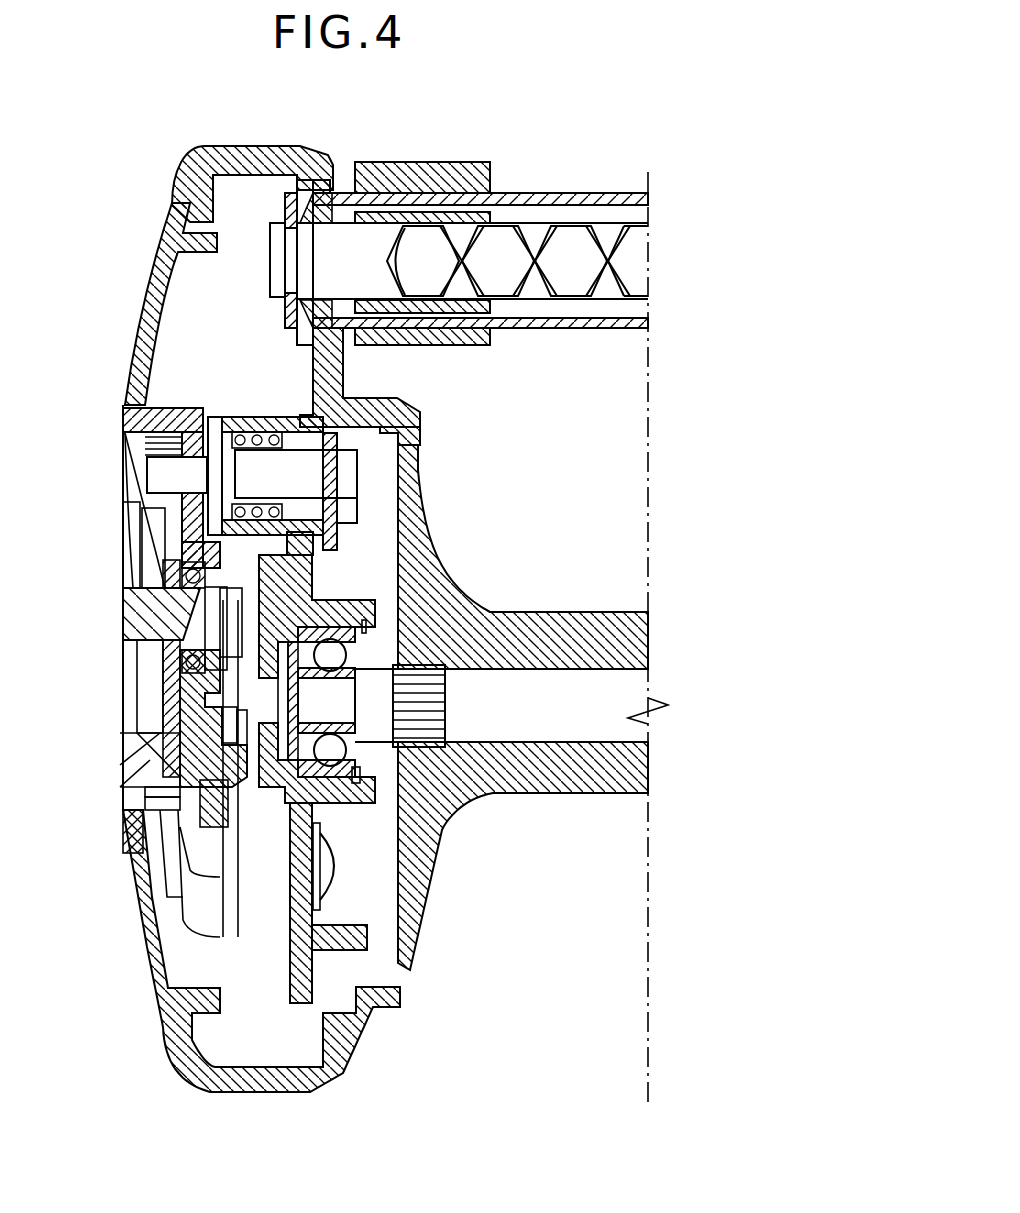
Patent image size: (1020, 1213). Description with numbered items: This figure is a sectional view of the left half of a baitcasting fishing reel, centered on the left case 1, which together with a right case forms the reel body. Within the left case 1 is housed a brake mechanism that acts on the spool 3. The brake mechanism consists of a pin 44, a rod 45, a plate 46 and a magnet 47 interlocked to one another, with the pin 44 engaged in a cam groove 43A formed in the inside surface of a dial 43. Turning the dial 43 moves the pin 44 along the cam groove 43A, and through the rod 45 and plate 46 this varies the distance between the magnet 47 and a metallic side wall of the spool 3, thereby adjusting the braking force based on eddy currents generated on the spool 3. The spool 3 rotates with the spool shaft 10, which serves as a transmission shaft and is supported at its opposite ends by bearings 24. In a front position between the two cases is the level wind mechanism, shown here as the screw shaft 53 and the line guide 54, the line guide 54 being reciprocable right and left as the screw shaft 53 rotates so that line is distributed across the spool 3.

The left case 1 is at (254, 144).
The spool 3 is at (553, 633).
The spool shaft 10 is at (524, 723).
The bearings 24 is at (350, 802).
The dial 43 is at (148, 765).
The cam groove 43A is at (158, 478).
The pin 44 is at (172, 468).
The rod 45 is at (258, 460).
The plate 46 is at (337, 543).
The magnet 47 is at (348, 493).
The screw shaft 53 is at (636, 263).
The line guide 54 is at (480, 163).